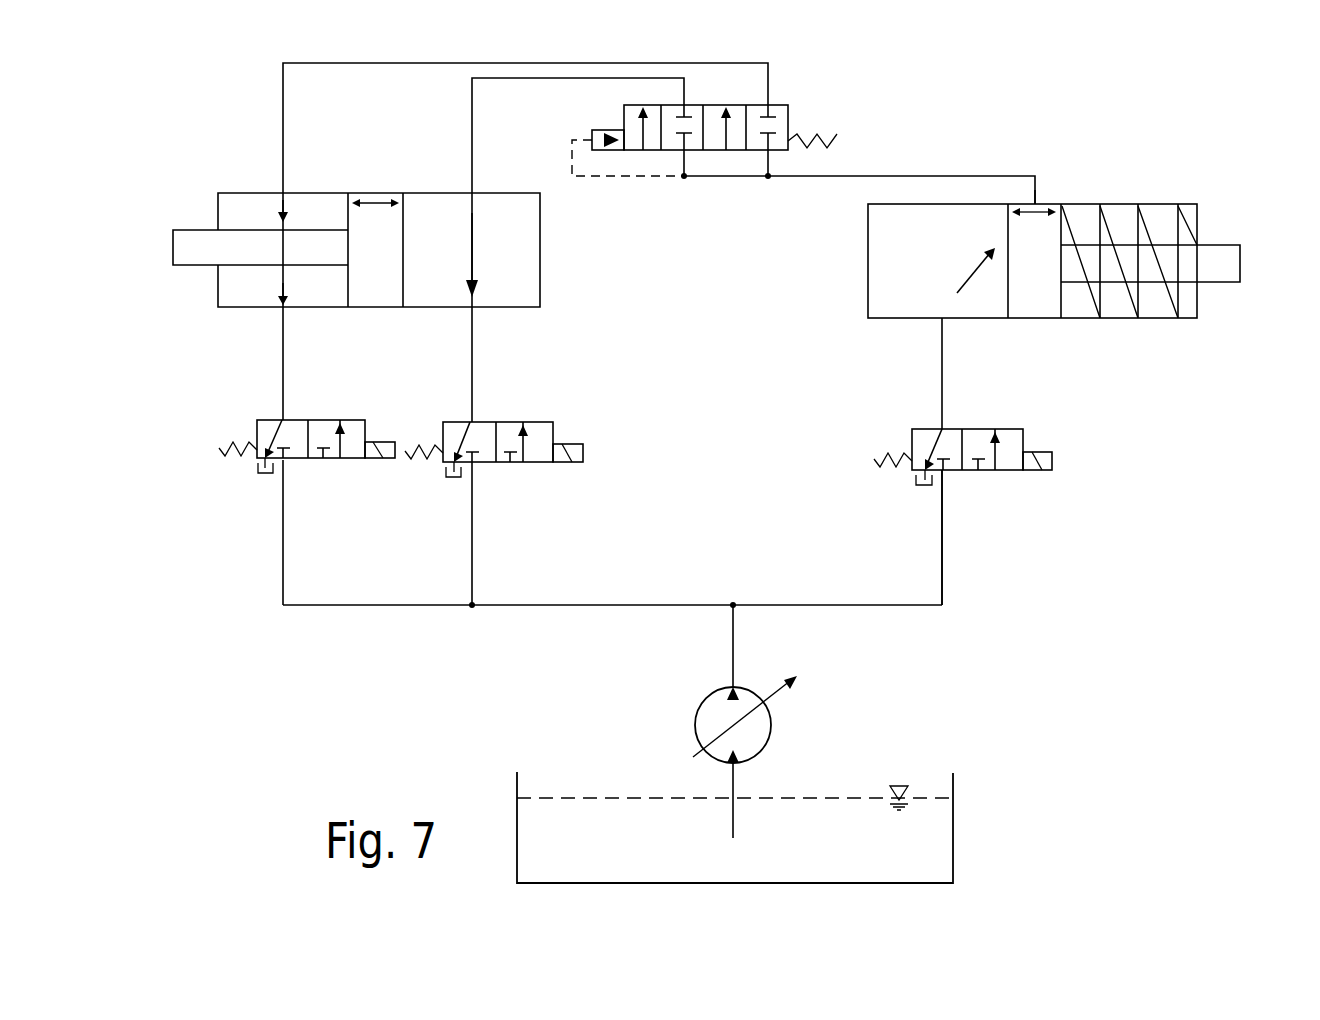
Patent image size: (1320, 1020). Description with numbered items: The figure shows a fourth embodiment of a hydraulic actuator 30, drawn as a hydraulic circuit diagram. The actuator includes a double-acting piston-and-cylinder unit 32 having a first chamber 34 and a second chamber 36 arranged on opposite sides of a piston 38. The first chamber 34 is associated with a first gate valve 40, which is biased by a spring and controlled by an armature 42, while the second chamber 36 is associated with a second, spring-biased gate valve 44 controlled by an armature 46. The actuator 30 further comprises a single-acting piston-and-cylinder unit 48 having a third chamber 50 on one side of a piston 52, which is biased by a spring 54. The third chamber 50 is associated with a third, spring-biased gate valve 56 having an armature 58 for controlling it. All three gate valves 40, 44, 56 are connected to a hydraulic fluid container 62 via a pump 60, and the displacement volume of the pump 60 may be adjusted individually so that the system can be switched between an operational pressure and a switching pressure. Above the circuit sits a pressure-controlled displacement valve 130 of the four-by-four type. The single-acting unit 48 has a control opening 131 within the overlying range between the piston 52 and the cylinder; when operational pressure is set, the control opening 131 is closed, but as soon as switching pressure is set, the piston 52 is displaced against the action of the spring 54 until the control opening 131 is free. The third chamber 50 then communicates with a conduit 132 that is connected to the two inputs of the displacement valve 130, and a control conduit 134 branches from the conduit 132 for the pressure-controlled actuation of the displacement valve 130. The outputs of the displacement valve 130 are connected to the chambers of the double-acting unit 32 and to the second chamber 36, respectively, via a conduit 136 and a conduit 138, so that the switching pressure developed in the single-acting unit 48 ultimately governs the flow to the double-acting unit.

The hydraulic actuator 30 is at (1056, 360).
The double-acting piston-and-cylinder unit 32 is at (497, 193).
The first chamber 34 is at (540, 219).
The second chamber 36 is at (292, 208).
The piston 38 is at (398, 203).
The first gate valve 40 is at (542, 422).
The armature 42 is at (583, 448).
The second gate valve 44 is at (257, 432).
The armature 46 is at (374, 461).
The single-acting piston-and-cylinder unit 48 is at (1080, 320).
The third chamber 50 is at (892, 283).
The piston 52 is at (1053, 220).
The spring 54 is at (1215, 228).
The third gate valve 56 is at (1010, 472).
The armature 58 is at (1052, 460).
The pump 60 is at (773, 723).
The hydraulic fluid container 62 is at (953, 828).
The pressure-controlled 4/4-displacement valve 130 is at (788, 114).
The control opening 131 is at (1038, 200).
The conduit 132 is at (842, 178).
The control conduit 134 is at (648, 178).
The conduit 136 is at (283, 118).
The conduit 138 is at (470, 117).